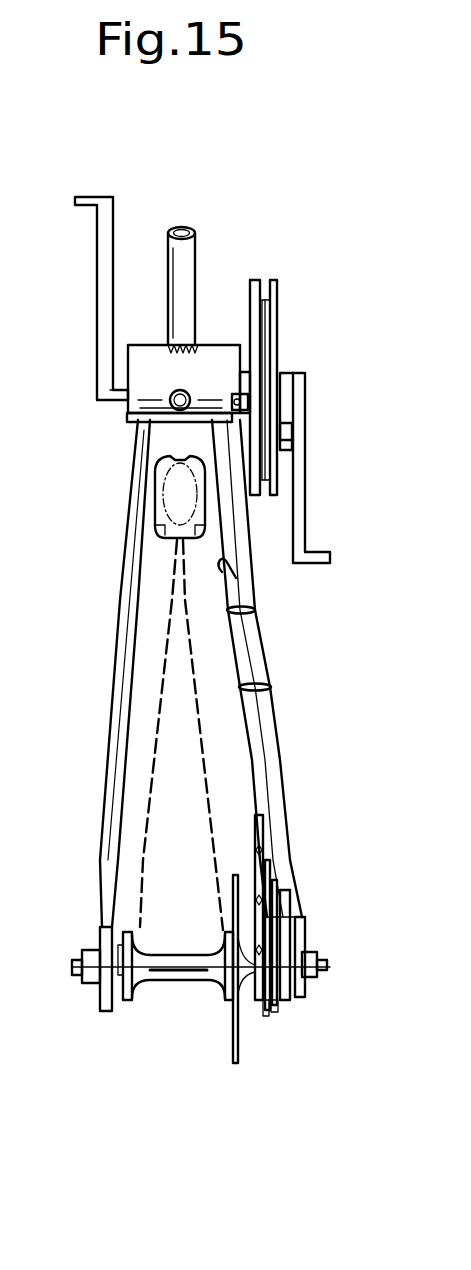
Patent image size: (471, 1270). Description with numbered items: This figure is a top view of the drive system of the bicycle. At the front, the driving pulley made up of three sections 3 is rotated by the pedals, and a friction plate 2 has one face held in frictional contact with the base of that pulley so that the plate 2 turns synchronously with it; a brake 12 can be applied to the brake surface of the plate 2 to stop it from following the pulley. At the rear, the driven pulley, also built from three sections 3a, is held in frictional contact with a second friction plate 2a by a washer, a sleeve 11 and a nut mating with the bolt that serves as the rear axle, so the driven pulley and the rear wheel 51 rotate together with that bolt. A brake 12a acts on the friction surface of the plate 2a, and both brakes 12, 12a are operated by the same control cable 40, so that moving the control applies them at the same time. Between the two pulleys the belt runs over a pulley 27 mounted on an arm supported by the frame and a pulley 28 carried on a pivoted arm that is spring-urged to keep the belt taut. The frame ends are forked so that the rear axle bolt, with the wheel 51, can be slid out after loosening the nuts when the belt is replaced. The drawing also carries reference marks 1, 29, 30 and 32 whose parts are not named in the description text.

The rear wheel disc 1 is at (247, 988).
The friction plate 2 is at (254, 300).
The sections of driving pulley 3 is at (274, 300).
The friction plate 2a is at (274, 1012).
The sections of driven pulley 3a is at (266, 1017).
The sleeve 11 is at (300, 972).
The brake 12 is at (238, 398).
The brake 12a is at (292, 985).
The pulley 27 is at (264, 835).
The pulley 28 is at (266, 892).
The hub 29 is at (180, 982).
The bracket 30 is at (285, 433).
The housing 32 is at (143, 352).
The control cable 40 is at (222, 574).
The rear wheel 51 is at (160, 500).